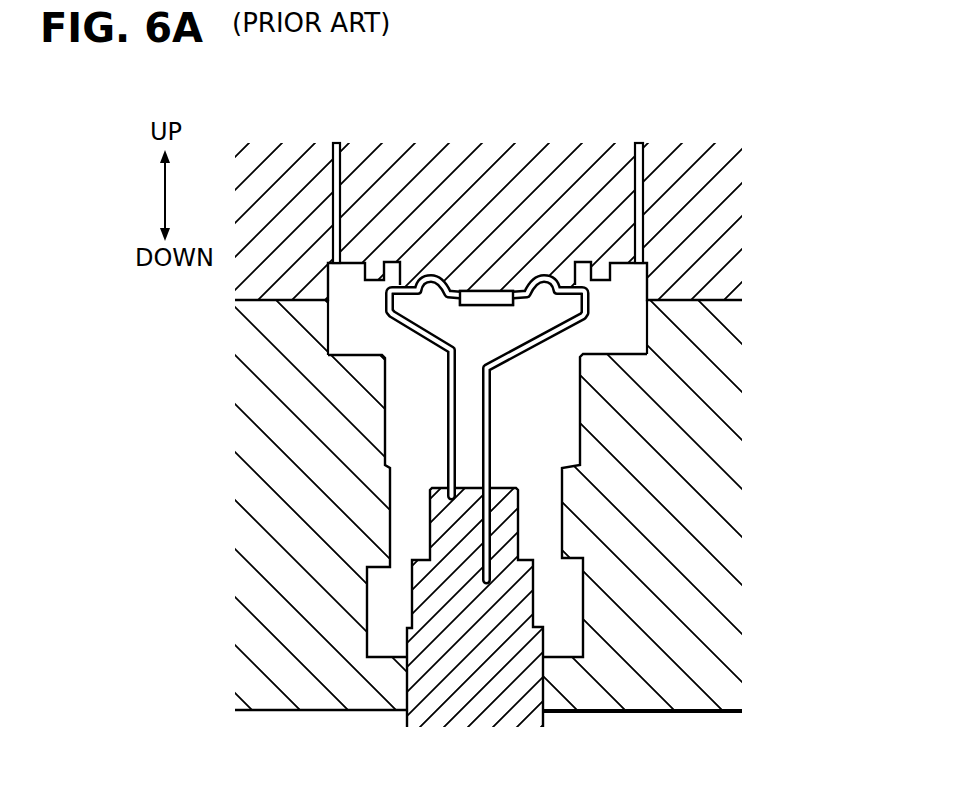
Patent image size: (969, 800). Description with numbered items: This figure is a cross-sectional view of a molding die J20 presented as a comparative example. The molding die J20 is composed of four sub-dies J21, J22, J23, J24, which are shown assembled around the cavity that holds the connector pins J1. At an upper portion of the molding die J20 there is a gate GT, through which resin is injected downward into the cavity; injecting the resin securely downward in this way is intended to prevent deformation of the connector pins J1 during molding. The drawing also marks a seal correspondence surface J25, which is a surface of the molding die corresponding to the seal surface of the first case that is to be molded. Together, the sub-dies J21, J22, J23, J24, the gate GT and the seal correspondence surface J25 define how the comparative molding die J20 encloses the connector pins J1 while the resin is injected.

The gate GT is at (343, 290).
The seal correspondence surface J25 is at (338, 278).
The sub-die J24 is at (465, 162).
The connector pins J1 is at (450, 400).
The molding die J20 is at (820, 718).
The sub-die J21 is at (435, 700).
The sub-die J22 is at (610, 688).
The sub-die J23 is at (288, 673).